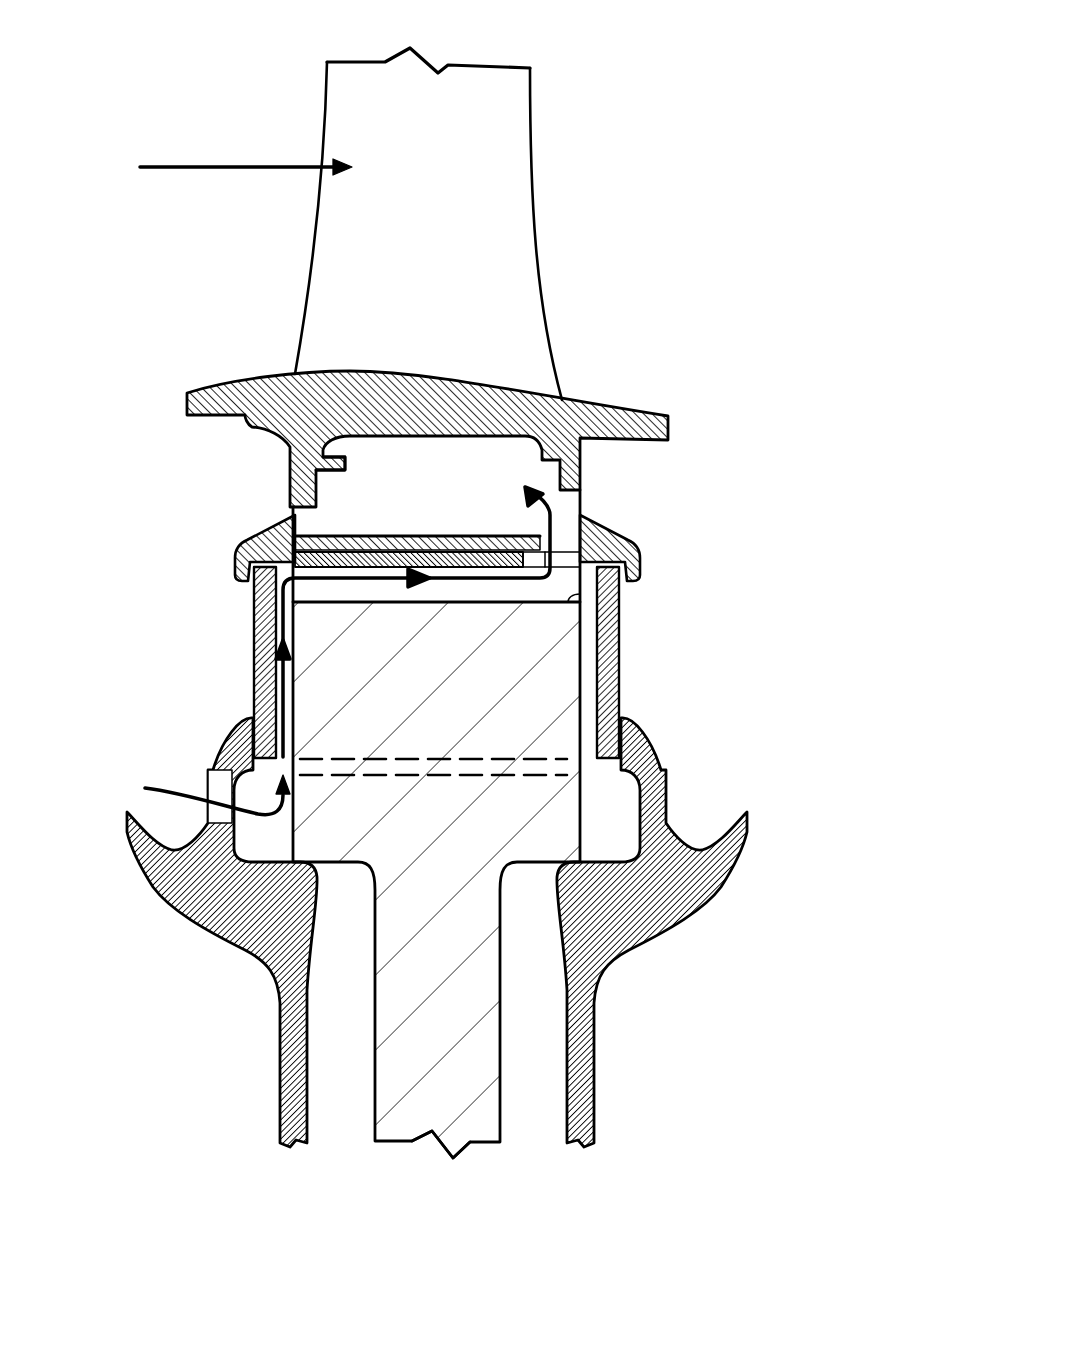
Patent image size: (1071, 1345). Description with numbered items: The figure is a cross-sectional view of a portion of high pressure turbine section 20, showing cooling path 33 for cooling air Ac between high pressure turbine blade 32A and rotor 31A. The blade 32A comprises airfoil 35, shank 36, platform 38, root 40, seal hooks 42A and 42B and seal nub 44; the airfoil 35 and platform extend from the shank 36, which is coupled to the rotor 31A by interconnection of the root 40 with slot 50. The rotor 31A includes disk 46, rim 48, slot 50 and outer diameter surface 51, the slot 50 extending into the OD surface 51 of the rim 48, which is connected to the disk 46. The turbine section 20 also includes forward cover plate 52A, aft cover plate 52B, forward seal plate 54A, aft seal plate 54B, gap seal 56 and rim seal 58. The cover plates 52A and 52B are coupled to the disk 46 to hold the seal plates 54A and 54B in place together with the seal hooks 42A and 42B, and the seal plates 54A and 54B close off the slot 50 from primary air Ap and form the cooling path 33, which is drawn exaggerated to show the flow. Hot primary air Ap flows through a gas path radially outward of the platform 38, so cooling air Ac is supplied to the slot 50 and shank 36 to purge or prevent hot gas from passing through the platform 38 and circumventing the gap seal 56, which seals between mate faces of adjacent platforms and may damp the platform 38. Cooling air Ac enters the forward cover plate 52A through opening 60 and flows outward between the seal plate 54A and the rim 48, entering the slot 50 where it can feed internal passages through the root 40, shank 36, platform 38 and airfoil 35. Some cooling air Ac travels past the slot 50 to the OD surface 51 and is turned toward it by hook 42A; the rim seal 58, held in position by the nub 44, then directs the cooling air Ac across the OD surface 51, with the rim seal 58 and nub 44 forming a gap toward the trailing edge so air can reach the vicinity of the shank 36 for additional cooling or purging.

The high pressure turbine section 20 is at (664, 66).
The rotor 31A is at (510, 1017).
The high pressure turbine blade 32A is at (620, 390).
The cooling path 33 is at (255, 628).
The airfoil 35 is at (386, 268).
The shank 36 is at (442, 513).
The platform 38 is at (252, 402).
The root 40 is at (367, 747).
The forward seal hook 42A is at (245, 541).
The aft seal hook 42B is at (635, 541).
The seal nub 44 is at (388, 543).
The disk 46 is at (473, 1110).
The rim 48 is at (445, 749).
The slot 50 is at (477, 773).
The outer diameter surface 51 is at (580, 597).
The forward cover plate 52A is at (210, 935).
The aft cover plate 52B is at (660, 933).
The forward seal plate 54A is at (258, 630).
The aft seal plate 54B is at (623, 702).
The gap seal 56 is at (325, 477).
The rim seal 58 is at (355, 560).
The opening 60 is at (215, 773).
The primary air Ap is at (208, 168).
The cooling air Ac is at (172, 787).